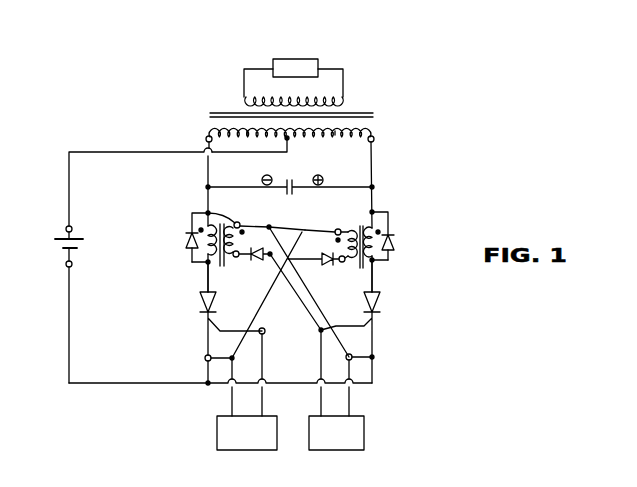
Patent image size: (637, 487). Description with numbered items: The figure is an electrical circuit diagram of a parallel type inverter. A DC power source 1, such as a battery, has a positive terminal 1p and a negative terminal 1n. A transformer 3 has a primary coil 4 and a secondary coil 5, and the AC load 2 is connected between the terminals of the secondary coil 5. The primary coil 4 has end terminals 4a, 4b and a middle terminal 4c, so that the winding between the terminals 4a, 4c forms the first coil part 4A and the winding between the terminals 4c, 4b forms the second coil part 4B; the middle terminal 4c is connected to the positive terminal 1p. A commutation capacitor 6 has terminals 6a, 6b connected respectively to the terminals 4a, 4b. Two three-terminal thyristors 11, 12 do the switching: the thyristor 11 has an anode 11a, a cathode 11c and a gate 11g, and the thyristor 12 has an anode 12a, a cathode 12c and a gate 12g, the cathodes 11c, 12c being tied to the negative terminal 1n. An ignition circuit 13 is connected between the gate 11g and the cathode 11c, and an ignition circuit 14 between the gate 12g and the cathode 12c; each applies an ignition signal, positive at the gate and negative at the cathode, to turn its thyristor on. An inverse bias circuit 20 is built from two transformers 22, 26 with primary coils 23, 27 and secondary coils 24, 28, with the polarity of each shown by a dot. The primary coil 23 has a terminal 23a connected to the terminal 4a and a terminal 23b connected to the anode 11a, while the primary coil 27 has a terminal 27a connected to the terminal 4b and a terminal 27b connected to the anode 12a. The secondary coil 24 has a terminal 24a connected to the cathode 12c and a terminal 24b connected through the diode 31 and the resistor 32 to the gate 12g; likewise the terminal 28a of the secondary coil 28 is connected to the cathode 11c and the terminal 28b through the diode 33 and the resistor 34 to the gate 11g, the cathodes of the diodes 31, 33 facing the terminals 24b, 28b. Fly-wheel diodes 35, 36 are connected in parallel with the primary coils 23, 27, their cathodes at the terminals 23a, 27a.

The DC power source 1 is at (84, 242).
The positive terminal 1p is at (66, 229).
The negative terminal 1n is at (66, 264).
The AC load 2 is at (300, 59).
The transformer 3 is at (373, 113).
The primary coil 4 is at (208, 129).
The first coil part 4A is at (337, 147).
The second coil part 4B is at (246, 130).
The terminal 4a is at (373, 137).
The terminal 4b is at (206, 139).
The middle terminal 4c is at (288, 140).
The secondary coil 5 is at (318, 102).
The commutation capacitor 6 is at (290, 179).
The terminal 6a is at (305, 228).
The terminal 6b is at (269, 224).
The thyristor 11 is at (378, 307).
The anode 11a is at (377, 288).
The cathode 11c is at (378, 337).
The gate 11g is at (375, 352).
The thyristor 12 is at (200, 311).
The anode 12a is at (201, 293).
The cathode 12c is at (206, 329).
The gate 12g is at (203, 348).
The ignition circuit 13 is at (364, 436).
The ignition circuit 14 is at (217, 437).
The inverse bias circuit 20 is at (287, 219).
The transformer 22 is at (355, 294).
The primary coil 23 is at (390, 224).
The terminal 23a is at (375, 210).
The terminal 23b is at (376, 260).
The secondary coil 24 is at (347, 229).
The terminal 24a is at (341, 216).
The terminal 24b is at (350, 268).
The transformer 26 is at (218, 313).
The primary coil 27 is at (186, 243).
The terminal 27a is at (192, 213).
The terminal 27b is at (207, 265).
The secondary coil 28 is at (207, 211).
The terminal 28a is at (228, 210).
The terminal 28b is at (224, 266).
The diode 31 is at (313, 275).
The resistor 32 is at (276, 303).
The diode 33 is at (258, 262).
The resistor 34 is at (304, 303).
The fly-wheel diode 35 is at (393, 243).
The fly-wheel diode 36 is at (190, 247).